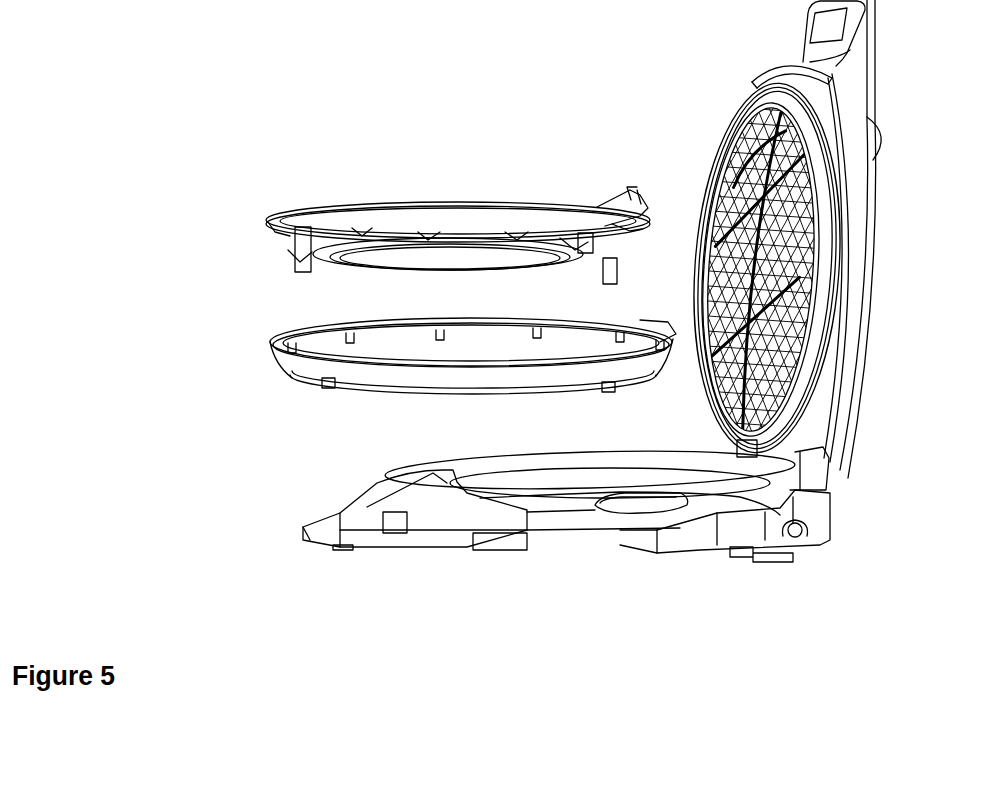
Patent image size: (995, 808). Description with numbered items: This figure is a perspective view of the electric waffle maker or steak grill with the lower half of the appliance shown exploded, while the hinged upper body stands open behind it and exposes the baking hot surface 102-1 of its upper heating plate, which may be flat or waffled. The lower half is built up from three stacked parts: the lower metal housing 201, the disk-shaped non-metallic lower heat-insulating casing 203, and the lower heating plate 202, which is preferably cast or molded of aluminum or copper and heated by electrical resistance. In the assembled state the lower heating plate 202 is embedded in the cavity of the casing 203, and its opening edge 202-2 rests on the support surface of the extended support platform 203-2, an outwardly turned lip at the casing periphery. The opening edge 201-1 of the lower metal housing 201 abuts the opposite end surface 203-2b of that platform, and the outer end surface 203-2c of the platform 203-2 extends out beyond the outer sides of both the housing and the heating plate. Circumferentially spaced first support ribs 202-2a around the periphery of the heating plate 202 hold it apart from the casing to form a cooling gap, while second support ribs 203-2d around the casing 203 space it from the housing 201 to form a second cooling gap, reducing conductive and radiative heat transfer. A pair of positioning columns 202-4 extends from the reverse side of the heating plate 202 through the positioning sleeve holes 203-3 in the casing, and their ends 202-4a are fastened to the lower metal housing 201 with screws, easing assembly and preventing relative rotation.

The baking hot surface 102-1 is at (718, 172).
The lower metal housing 201 is at (566, 518).
The opening edge of the lower metal housing 201-1 is at (493, 457).
The lower heating plate 202 is at (401, 229).
The opening edge of the lower heating plate 202-2 is at (272, 228).
The first support ribs 202-2a is at (346, 216).
The positioning columns 202-4 is at (606, 262).
The ends of the positioning columns 202-4a is at (528, 204).
The lower heat-insulating casing 203 is at (359, 368).
The extended support platform 203-2 is at (272, 337).
The end surface of the extended support platform 203-2b is at (273, 343).
The outer end surface of the extended support platform 203-2c is at (583, 320).
The second support ribs 203-2d is at (543, 333).
The positioning sleeve holes 203-3 is at (317, 372).